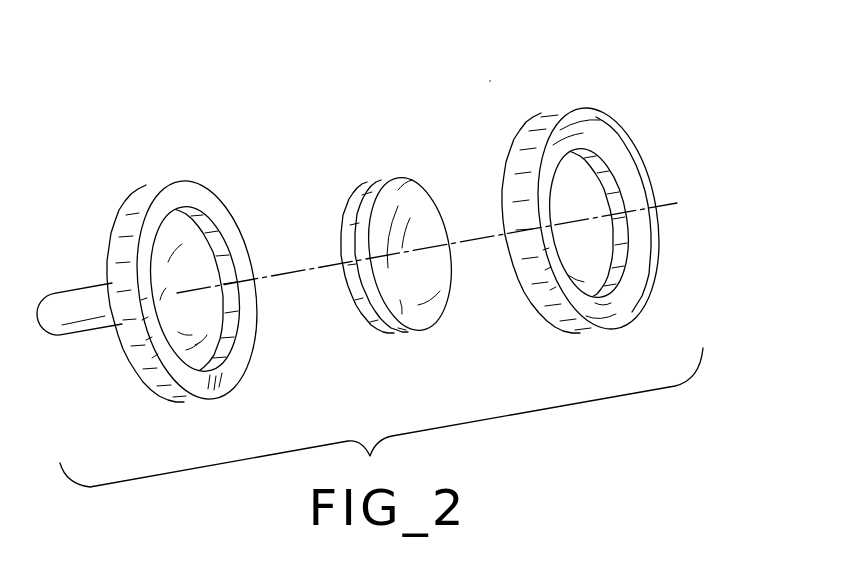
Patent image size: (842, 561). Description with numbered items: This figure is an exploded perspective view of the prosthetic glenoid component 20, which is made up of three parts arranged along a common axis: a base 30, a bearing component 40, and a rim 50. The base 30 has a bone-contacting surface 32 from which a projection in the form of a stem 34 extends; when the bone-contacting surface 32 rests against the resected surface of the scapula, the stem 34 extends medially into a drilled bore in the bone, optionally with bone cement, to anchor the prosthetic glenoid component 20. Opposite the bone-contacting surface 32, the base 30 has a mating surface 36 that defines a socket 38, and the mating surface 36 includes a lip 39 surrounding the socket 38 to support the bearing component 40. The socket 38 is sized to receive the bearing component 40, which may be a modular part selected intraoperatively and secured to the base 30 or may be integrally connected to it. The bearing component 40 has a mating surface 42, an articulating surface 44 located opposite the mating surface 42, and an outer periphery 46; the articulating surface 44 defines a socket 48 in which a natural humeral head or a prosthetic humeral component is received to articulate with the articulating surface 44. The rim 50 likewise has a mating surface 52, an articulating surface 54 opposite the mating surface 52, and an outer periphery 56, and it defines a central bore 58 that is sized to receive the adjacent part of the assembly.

The prosthetic glenoid component 20 is at (490, 81).
The base 30 is at (176, 165).
The bone-contacting surface 32 is at (121, 220).
The stem 34 is at (92, 322).
The mating surface 36 is at (194, 243).
The socket 38 is at (206, 330).
The lip 39 is at (233, 383).
The bearing component 40 is at (380, 145).
The mating surface 42 is at (345, 213).
The articulating surface 44 is at (408, 213).
The outer periphery 46 is at (405, 333).
The socket 48 is at (415, 252).
The rim 50 is at (615, 103).
The mating surface 52 is at (507, 157).
The articulating surface 54 is at (630, 177).
The outer periphery 56 is at (590, 333).
The bore 58 is at (603, 249).